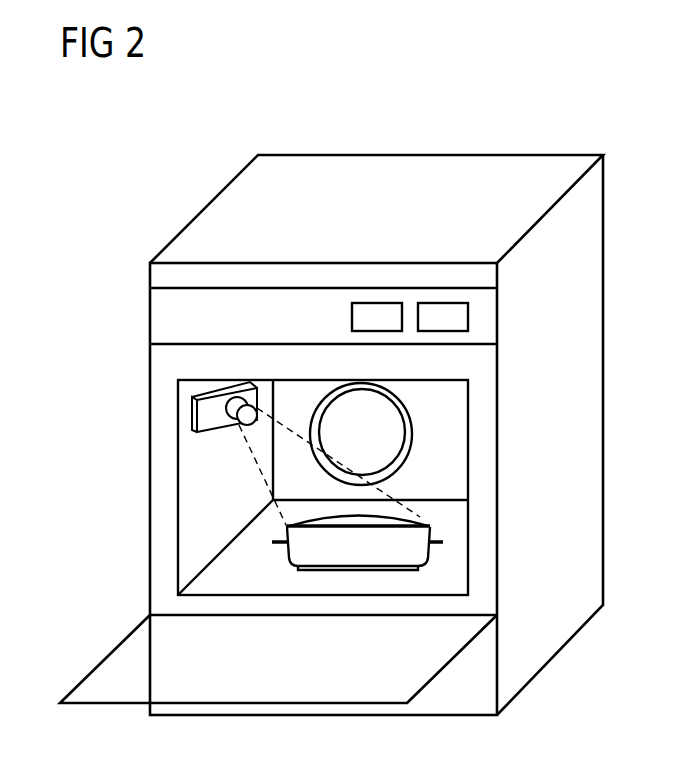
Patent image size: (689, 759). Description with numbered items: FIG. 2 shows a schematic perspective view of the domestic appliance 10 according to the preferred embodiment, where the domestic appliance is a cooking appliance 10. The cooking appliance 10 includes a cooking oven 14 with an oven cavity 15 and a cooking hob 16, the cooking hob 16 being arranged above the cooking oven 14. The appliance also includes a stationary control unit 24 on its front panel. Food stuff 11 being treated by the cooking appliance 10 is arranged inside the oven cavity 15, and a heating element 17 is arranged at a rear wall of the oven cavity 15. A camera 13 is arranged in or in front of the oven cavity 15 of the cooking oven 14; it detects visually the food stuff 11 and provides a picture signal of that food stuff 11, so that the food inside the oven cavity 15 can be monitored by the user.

The domestic appliance 10 is at (170, 178).
The food stuff 11 is at (350, 547).
The camera 13 is at (193, 420).
The cooking oven 14 is at (128, 489).
The oven cavity 15 is at (448, 418).
The cooking hob 16 is at (187, 277).
The heating element 17 is at (413, 440).
The stationary control unit 24 is at (187, 317).